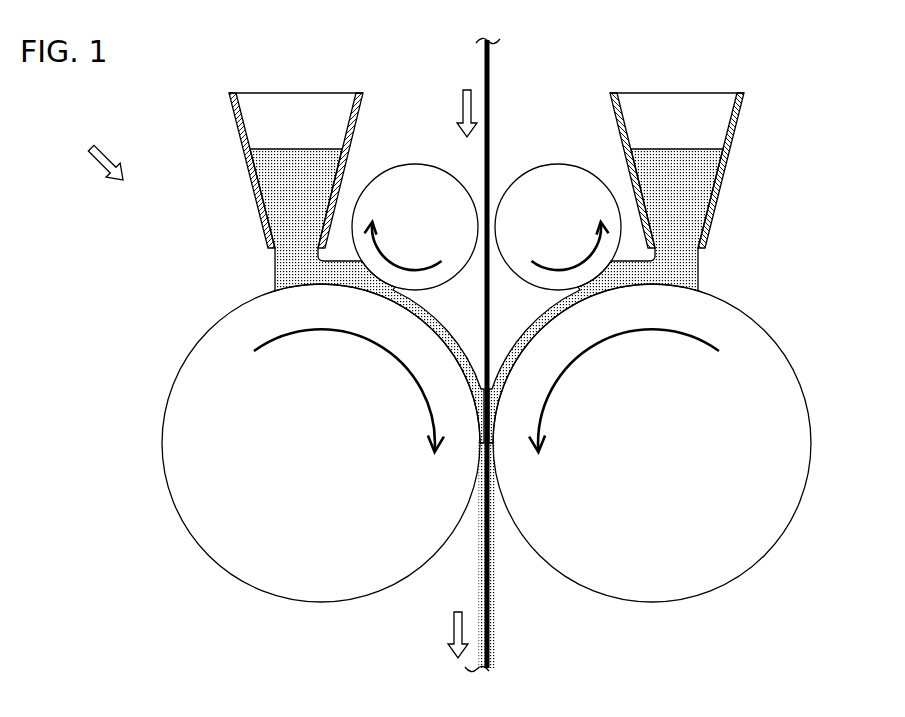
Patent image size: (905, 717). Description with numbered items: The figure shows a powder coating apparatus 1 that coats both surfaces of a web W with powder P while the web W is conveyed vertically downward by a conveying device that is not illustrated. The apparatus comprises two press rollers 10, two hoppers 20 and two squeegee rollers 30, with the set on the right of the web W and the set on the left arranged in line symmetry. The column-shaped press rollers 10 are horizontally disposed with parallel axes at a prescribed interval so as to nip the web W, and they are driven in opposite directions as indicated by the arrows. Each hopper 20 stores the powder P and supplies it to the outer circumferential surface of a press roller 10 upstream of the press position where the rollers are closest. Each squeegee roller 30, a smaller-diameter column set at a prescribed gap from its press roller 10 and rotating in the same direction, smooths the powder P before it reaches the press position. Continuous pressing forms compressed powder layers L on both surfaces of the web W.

The powder coating apparatus 1 is at (102, 152).
The press roller 10 is at (168, 441).
The hopper 20 is at (297, 97).
The squeegee roller 30 is at (415, 172).
The powder P is at (265, 181).
The web W is at (488, 102).
The compressed powder layer L is at (478, 577).